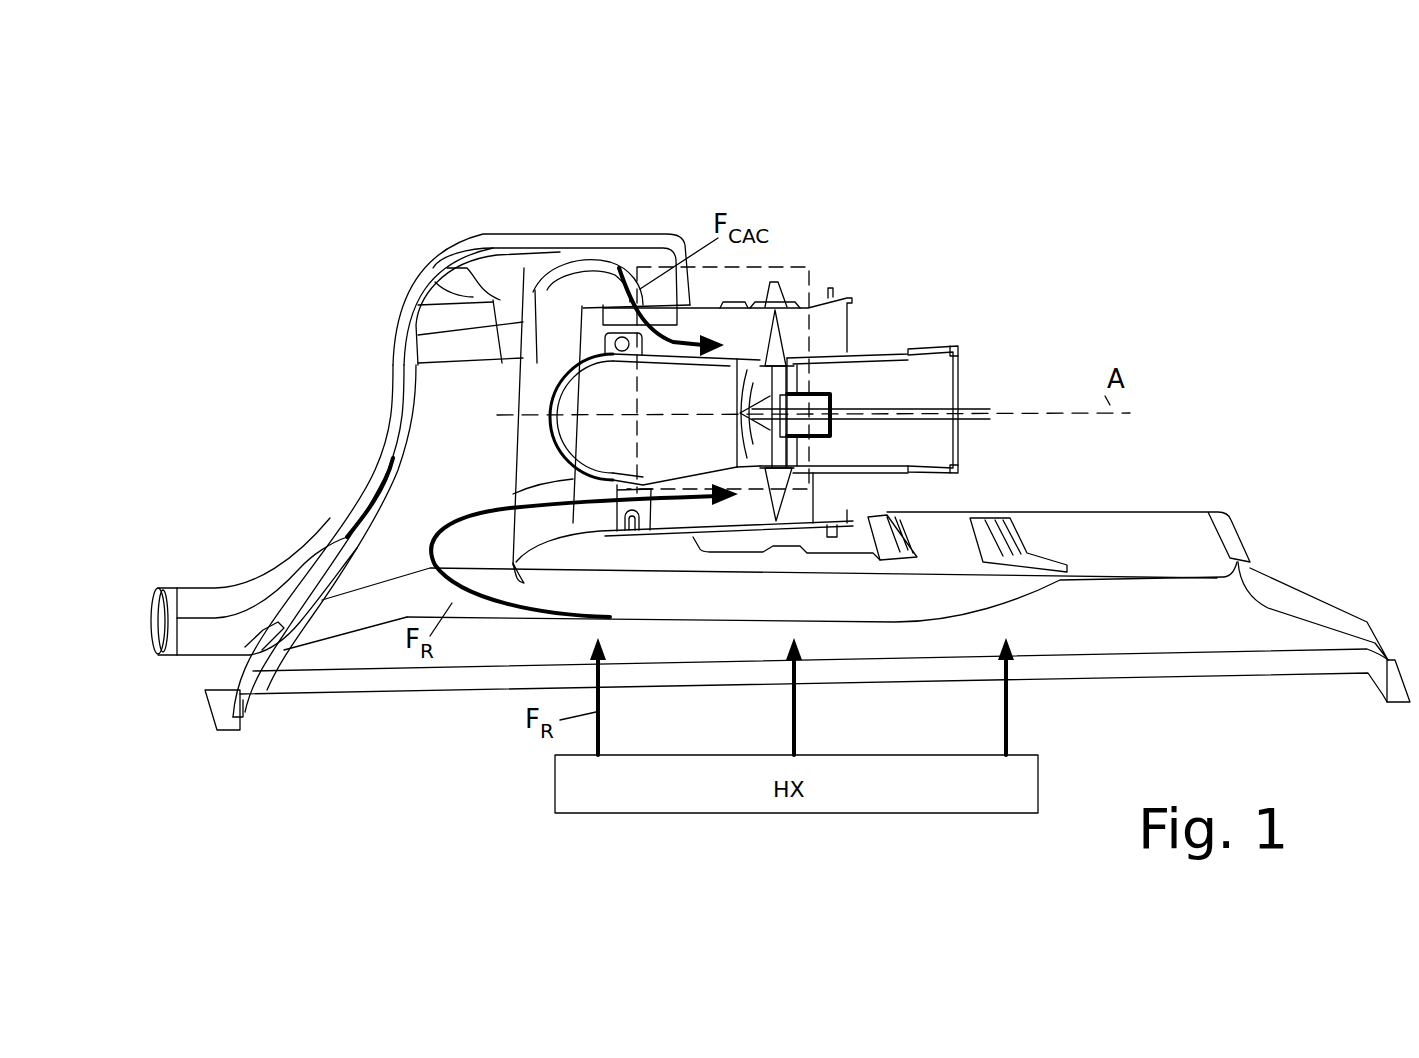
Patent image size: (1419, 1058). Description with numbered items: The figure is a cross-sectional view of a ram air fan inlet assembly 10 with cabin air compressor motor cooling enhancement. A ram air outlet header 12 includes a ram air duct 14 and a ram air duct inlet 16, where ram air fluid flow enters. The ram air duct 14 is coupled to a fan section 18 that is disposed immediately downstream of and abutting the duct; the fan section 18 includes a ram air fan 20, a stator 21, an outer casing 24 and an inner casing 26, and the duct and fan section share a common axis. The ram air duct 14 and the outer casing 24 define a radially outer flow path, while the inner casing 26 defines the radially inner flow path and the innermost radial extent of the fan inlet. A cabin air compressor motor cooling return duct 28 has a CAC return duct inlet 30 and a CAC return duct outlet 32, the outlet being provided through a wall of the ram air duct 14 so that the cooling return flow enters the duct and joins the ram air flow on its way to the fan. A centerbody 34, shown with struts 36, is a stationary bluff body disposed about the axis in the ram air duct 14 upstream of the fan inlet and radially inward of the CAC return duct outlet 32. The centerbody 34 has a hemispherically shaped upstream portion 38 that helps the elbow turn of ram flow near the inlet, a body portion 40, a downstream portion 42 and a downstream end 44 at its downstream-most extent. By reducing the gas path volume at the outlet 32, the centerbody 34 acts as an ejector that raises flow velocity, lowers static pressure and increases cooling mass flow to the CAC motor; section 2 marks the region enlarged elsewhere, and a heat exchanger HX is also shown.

The section 2 is at (810, 267).
The ram air fan inlet assembly 10 is at (304, 158).
The ram air outlet header 12 is at (1013, 515).
The ram air duct 14 is at (681, 533).
The ram air duct inlet 16 is at (520, 481).
The fan section 18 is at (750, 198).
The ram air fan 20 is at (842, 333).
The stator 21 is at (793, 333).
The outer casing 24 is at (802, 468).
The inner casing 26 is at (840, 470).
The cabin air compressor motor cooling return duct 28 is at (470, 282).
The CAC return duct inlet 30 is at (148, 602).
The CAC return duct outlet 32 is at (640, 289).
The centerbody 34 is at (655, 417).
The struts 36 is at (656, 344).
The upstream portion 38 is at (553, 394).
The body portion 40 is at (640, 489).
The downstream portion 42 is at (695, 476).
The downstream end 44 is at (741, 433).